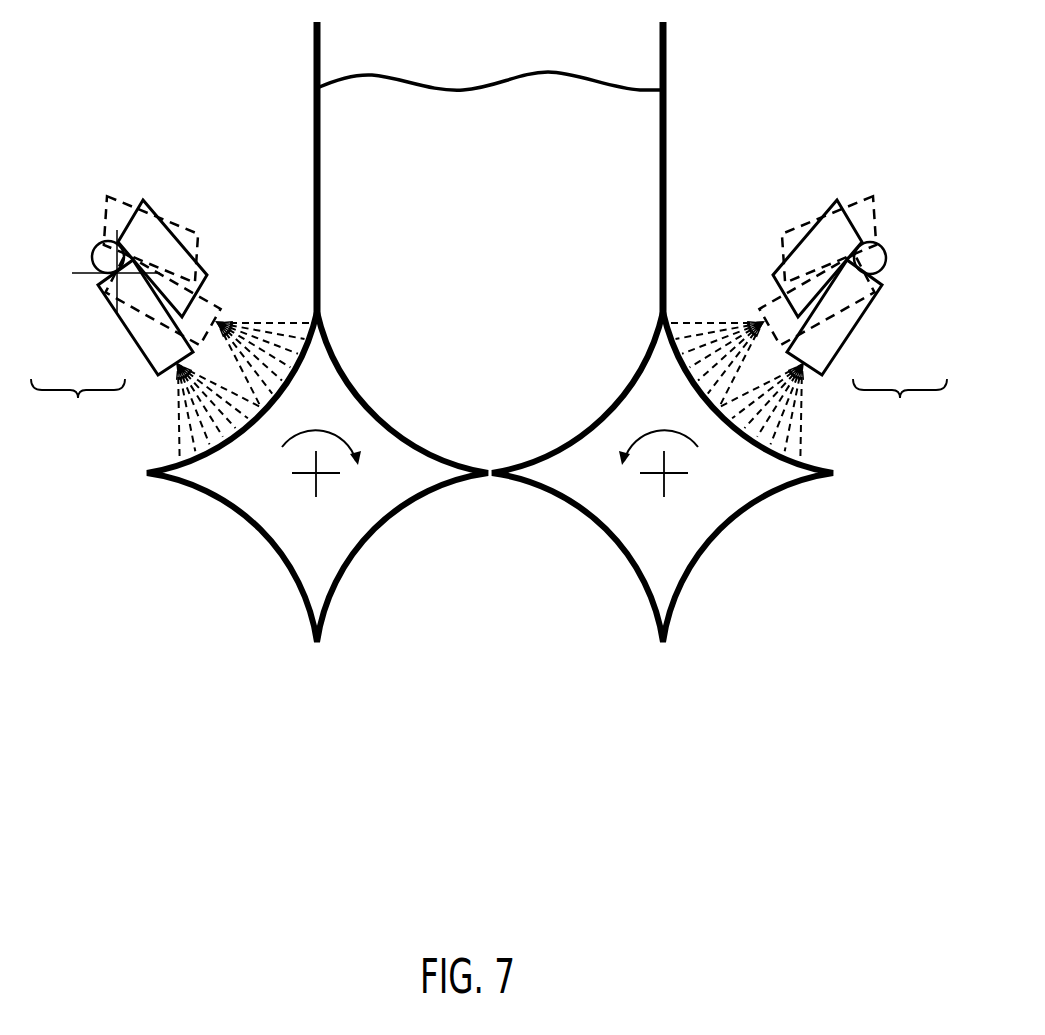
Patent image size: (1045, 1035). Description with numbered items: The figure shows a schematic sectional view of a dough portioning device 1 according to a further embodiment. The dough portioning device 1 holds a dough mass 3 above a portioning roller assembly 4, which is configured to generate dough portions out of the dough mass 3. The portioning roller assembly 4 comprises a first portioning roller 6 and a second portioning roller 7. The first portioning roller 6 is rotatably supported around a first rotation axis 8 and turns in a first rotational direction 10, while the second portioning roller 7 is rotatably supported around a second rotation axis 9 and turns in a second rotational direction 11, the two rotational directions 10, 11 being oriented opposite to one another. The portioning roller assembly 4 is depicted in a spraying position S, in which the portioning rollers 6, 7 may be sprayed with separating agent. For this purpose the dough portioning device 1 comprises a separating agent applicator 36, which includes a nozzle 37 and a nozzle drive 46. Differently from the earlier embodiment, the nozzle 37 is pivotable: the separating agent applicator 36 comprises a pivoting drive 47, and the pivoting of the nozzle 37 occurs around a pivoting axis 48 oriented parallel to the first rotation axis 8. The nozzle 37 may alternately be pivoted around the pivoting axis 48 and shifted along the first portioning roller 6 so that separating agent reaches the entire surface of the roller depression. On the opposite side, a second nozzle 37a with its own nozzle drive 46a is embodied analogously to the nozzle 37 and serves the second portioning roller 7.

The dough portioning device 1 is at (239, 72).
The dough mass 3 is at (495, 172).
The spraying position S is at (496, 370).
The portioning roller assembly 4 is at (429, 735).
The first portioning roller 6 is at (368, 513).
The second portioning roller 7 is at (612, 513).
The first rotation axis 8 is at (316, 486).
The second rotation axis 9 is at (664, 486).
The first rotational direction 10 is at (311, 430).
The second rotational direction 11 is at (668, 431).
The separating agent applicator 36 is at (489, 406).
The nozzle 37 is at (142, 343).
The second nozzle 37a is at (836, 341).
The nozzle drive 46 is at (100, 272).
The nozzle drive 46a is at (880, 272).
The pivoting drive 47 is at (170, 214).
The pivoting axis 48 is at (168, 264).